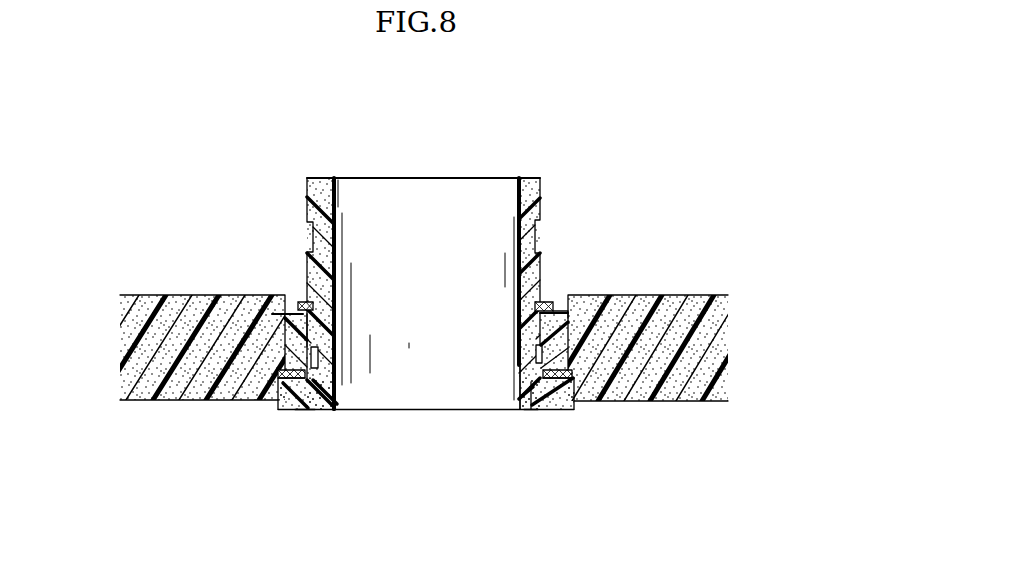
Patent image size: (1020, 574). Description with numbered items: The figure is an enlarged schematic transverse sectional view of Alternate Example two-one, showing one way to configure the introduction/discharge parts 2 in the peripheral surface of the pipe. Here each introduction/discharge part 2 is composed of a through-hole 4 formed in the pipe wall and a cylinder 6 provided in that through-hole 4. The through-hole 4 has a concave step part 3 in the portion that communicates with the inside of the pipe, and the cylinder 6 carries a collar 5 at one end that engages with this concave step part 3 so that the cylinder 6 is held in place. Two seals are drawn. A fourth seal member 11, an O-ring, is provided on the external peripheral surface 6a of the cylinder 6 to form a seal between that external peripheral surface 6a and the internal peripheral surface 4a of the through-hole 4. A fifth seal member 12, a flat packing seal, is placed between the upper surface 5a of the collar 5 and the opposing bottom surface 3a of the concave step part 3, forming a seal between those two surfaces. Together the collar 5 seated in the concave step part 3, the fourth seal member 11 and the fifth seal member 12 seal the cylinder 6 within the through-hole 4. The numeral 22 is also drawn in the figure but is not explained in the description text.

The introduction/discharge part 2 is at (543, 164).
The concave step part 3 is at (291, 414).
The bottom surface of the concave step part 3a is at (304, 411).
The through-hole 4 is at (299, 328).
The internal peripheral surface of the through-hole 4a is at (516, 362).
The collar 5 is at (569, 418).
The upper surface of the collar 5a is at (339, 385).
The cylinder 6 is at (547, 311).
The external peripheral surface of the cylinder 6a is at (568, 318).
The fourth seal member 11 is at (530, 410).
The fifth seal member 12 is at (293, 365).
The seal member 22 is at (553, 301).